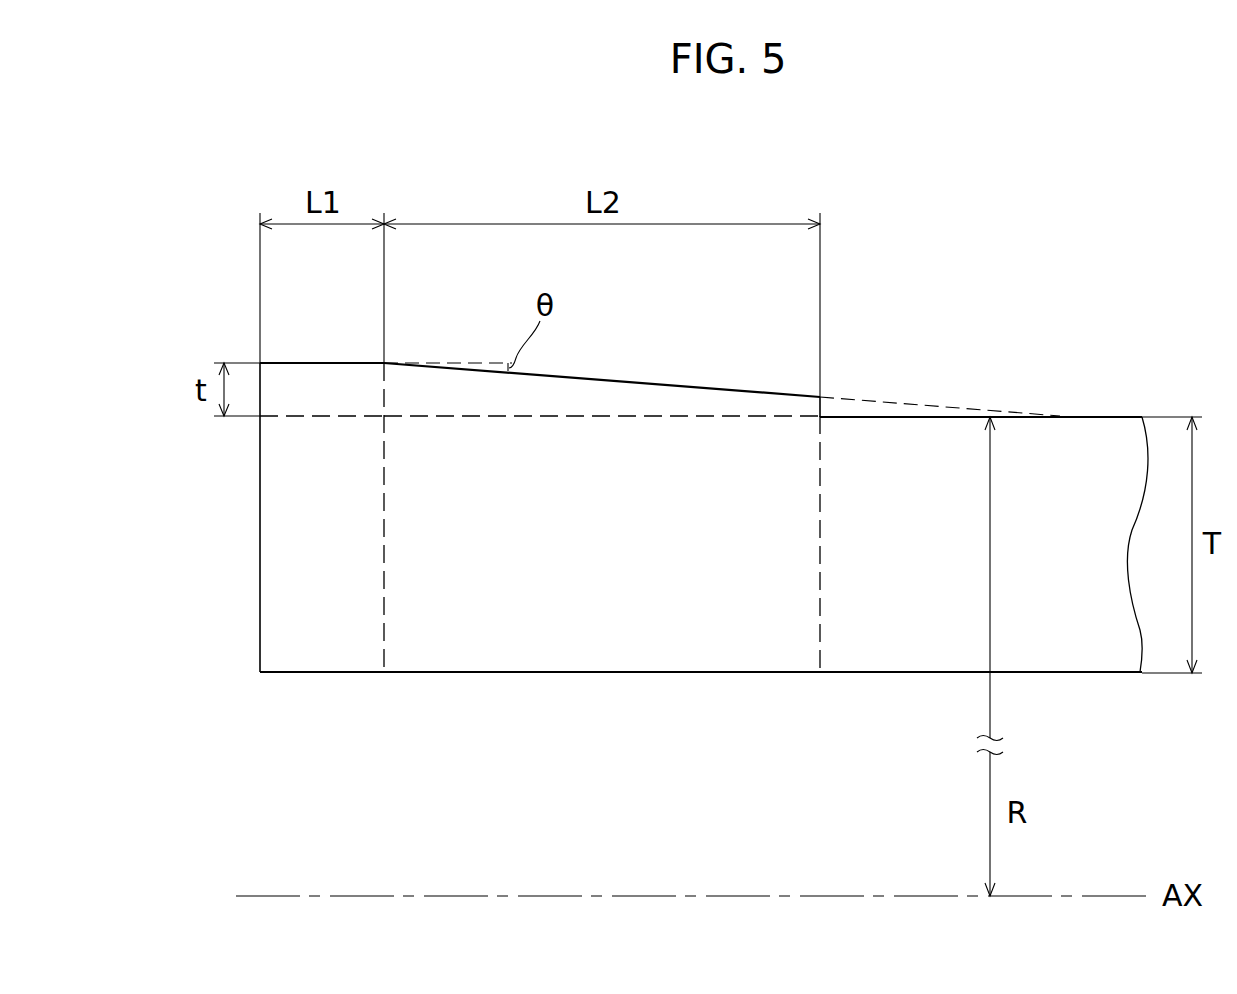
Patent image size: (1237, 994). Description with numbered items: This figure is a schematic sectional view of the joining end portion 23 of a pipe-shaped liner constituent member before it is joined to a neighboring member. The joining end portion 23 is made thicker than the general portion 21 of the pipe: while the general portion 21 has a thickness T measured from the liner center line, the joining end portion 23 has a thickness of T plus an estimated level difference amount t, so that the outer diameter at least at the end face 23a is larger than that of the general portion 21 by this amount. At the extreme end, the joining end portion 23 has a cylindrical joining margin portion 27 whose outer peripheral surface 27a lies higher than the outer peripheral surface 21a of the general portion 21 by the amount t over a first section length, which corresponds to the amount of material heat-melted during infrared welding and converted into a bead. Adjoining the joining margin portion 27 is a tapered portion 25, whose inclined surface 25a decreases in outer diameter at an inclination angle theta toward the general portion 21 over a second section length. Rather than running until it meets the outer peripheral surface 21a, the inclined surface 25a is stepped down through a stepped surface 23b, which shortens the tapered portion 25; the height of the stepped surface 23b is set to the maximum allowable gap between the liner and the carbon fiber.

The general portion 21 is at (1058, 412).
The outer peripheral surface of the general portion 21a is at (1112, 416).
The joining end portion 23 is at (432, 773).
The end face 23a is at (259, 533).
The stepped surface 23b is at (823, 406).
The tapered portion 25 is at (430, 655).
The inclined surface 25a is at (658, 384).
The joining margin portion 27 is at (325, 655).
The outer peripheral surface of the joining margin portion 27a is at (323, 362).